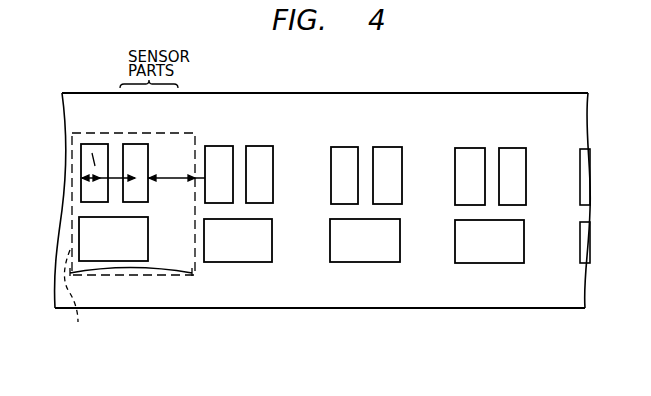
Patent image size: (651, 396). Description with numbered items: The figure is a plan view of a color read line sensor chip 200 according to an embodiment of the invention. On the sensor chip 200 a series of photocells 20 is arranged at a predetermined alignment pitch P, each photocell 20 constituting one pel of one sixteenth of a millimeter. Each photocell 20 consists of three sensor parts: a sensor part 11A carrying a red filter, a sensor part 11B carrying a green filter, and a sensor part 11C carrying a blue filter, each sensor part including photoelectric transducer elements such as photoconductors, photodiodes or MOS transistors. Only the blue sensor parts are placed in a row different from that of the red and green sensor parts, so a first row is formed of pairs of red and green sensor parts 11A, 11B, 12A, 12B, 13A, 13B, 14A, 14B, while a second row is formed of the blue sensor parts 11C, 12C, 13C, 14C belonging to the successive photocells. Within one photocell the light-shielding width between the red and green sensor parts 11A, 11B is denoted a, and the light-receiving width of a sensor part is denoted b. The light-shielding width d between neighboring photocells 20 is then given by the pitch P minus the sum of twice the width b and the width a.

The sensor part 11A is at (100, 148).
The sensor part 11B is at (142, 148).
The sensor part 11C is at (141, 248).
The sensor part 12A is at (225, 150).
The sensor part 12B is at (265, 150).
The sensor part 12C is at (248, 255).
The sensor part 13A is at (350, 150).
The sensor part 13B is at (395, 150).
The sensor part 13C is at (373, 255).
The sensor part 14A is at (472, 152).
The sensor part 14B is at (515, 152).
The sensor part 14C is at (493, 255).
The photocell 20 is at (128, 248).
The sensor chip 200 is at (465, 298).
The light-shielding width between the R and G sensor parts a is at (110, 180).
The light-receiving width of the sensor part b is at (93, 176).
The light-shielding width between the photocells d is at (176, 169).
The alignment pitch of the photocells P is at (158, 271).